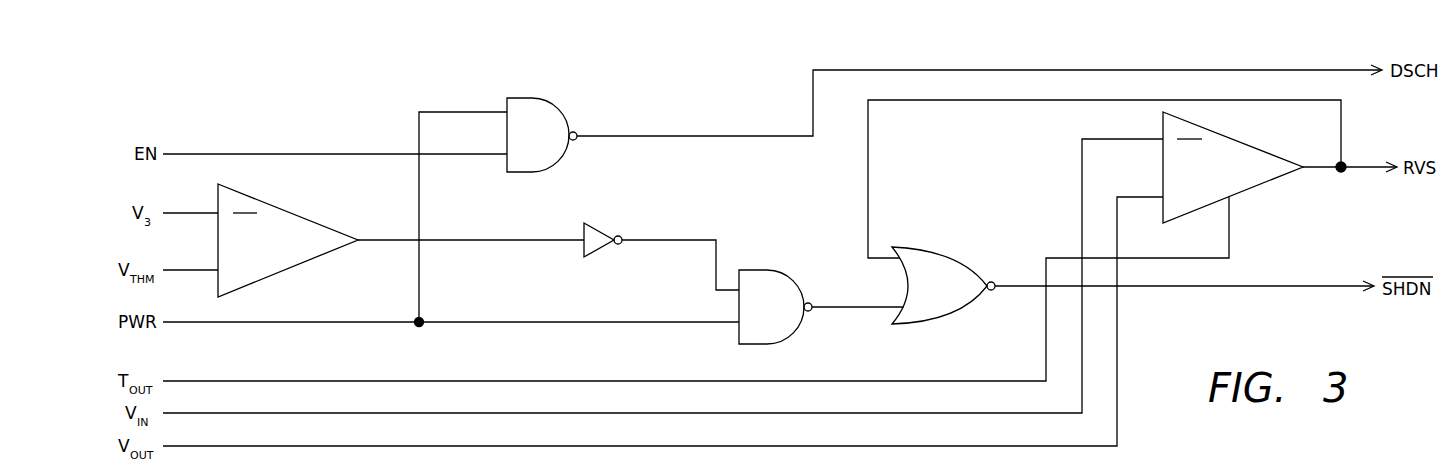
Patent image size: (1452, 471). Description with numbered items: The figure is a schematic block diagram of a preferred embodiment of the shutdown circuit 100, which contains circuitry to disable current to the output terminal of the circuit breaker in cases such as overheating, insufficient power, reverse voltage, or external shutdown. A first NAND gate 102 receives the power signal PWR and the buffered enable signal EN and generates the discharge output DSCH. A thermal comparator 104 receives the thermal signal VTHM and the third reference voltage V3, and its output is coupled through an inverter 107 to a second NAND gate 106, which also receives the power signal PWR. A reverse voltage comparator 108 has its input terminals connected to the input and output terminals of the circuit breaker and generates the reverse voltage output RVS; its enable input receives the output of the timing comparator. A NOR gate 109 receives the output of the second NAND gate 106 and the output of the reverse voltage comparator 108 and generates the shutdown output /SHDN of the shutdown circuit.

The shutdown circuit 100 is at (374, 82).
The first NAND gate 102 is at (546, 98).
The thermal comparator 104 is at (272, 205).
The second NAND gate 106 is at (760, 269).
The inverter 107 is at (593, 224).
The reverse voltage comparator 108 is at (1248, 190).
The NOR gate 109 is at (920, 245).